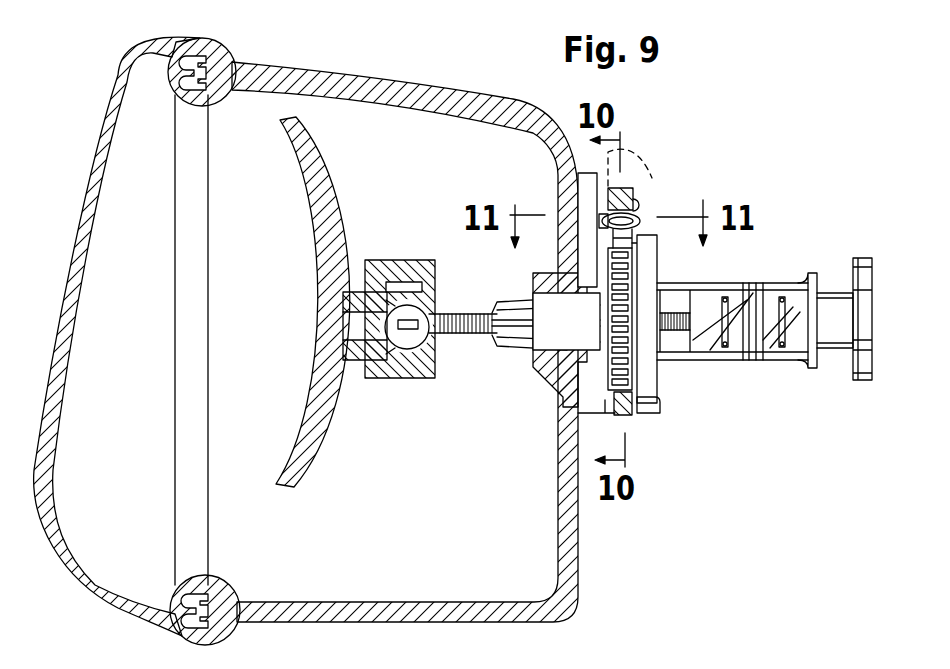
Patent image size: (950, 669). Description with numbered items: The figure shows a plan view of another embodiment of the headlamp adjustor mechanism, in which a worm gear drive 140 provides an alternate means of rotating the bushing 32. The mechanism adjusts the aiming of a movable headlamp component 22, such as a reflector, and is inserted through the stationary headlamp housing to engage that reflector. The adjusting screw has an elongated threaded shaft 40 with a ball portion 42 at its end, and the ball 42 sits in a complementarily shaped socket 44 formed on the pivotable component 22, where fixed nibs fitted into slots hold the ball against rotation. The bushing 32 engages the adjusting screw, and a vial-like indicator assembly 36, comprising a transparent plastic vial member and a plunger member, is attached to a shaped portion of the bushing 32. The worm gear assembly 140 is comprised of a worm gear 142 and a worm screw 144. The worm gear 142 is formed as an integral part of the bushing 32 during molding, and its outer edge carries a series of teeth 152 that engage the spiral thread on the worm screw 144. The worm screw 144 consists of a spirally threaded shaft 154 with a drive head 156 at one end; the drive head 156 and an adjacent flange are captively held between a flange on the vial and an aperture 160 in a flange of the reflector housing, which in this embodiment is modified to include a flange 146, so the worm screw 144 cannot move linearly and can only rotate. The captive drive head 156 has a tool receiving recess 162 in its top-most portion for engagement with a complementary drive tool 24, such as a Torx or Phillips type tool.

The movable headlamp component 22 is at (318, 167).
The drive tool 24 is at (635, 175).
The bushing 32 is at (548, 383).
The vial-like indicator assembly 36 is at (760, 284).
The elongated threaded shaft 40 is at (483, 338).
The ball portion 42 is at (446, 373).
The socket 44 is at (412, 267).
The worm gear drive 140 is at (646, 247).
The worm gear 142 is at (658, 401).
The worm screw 144 is at (588, 243).
The flange 146 is at (640, 222).
The teeth 152 is at (626, 364).
The shaft 154 is at (626, 414).
The drive head 156 is at (607, 197).
The aperture 160 is at (601, 220).
The tool receiving recess 162 is at (641, 201).